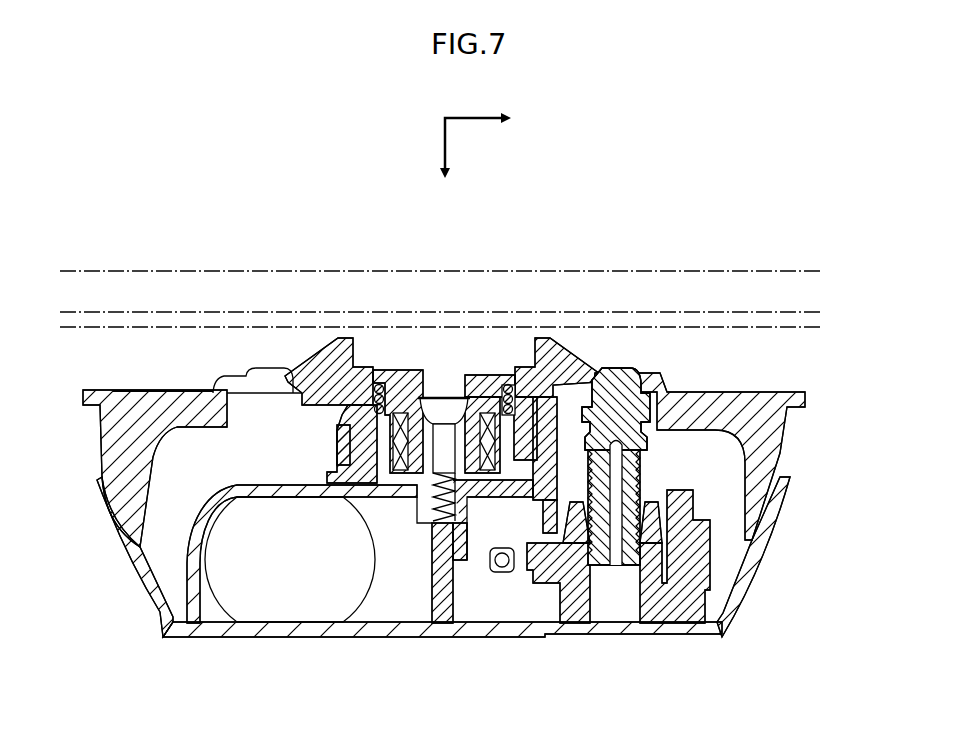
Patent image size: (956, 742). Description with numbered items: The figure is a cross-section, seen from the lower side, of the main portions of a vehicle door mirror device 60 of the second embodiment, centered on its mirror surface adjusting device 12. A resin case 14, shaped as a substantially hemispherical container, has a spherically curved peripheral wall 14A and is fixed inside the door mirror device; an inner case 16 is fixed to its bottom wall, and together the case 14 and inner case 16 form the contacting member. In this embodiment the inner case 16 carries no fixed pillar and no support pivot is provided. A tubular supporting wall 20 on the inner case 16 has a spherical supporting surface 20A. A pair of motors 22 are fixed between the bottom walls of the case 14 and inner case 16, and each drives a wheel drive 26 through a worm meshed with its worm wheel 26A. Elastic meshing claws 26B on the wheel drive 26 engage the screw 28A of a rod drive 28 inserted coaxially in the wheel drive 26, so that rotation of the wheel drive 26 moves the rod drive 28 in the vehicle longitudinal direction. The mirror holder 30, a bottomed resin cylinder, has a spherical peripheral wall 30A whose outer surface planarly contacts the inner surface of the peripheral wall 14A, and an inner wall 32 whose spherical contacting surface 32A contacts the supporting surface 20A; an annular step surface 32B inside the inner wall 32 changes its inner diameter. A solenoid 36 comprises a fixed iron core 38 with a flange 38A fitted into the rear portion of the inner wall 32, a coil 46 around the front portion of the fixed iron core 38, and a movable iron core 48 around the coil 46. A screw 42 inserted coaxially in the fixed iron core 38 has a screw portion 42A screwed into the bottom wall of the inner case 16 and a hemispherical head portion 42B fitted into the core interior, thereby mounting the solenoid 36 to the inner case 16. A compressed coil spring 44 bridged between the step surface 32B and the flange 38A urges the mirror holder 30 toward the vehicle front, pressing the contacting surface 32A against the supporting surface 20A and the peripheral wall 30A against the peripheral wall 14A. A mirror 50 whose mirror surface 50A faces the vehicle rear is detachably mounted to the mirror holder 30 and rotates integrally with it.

The mirror surface adjusting device 12 is at (121, 378).
The case 14 is at (477, 638).
The peripheral wall 14A is at (138, 575).
The inner case 16 is at (199, 491).
The supporting wall 20 is at (548, 470).
The supporting surface 20A is at (352, 424).
The motor 22 is at (370, 580).
The wheel drive 26 is at (688, 540).
The worm wheel 26A is at (522, 568).
The meshing claw 26B is at (650, 497).
The rod drive 28 is at (663, 388).
The screw 28A is at (641, 468).
The mirror holder 30 is at (160, 389).
The peripheral wall 30A is at (788, 430).
The inner wall 32 is at (565, 380).
The contacting surface 32A is at (347, 455).
The step surface 32B is at (366, 404).
The solenoid 36 is at (400, 372).
The fixed iron core 38 is at (490, 375).
The flange 38A is at (353, 364).
The screw 42 is at (437, 397).
The screw portion 42A is at (435, 505).
The head portion 42B is at (462, 404).
The coil spring 44 is at (506, 388).
The coil 46 is at (400, 474).
The movable iron core 48 is at (500, 474).
The mirror 50 is at (280, 271).
The mirror surface 50A is at (668, 312).
The vehicle door mirror device 60 is at (191, 151).